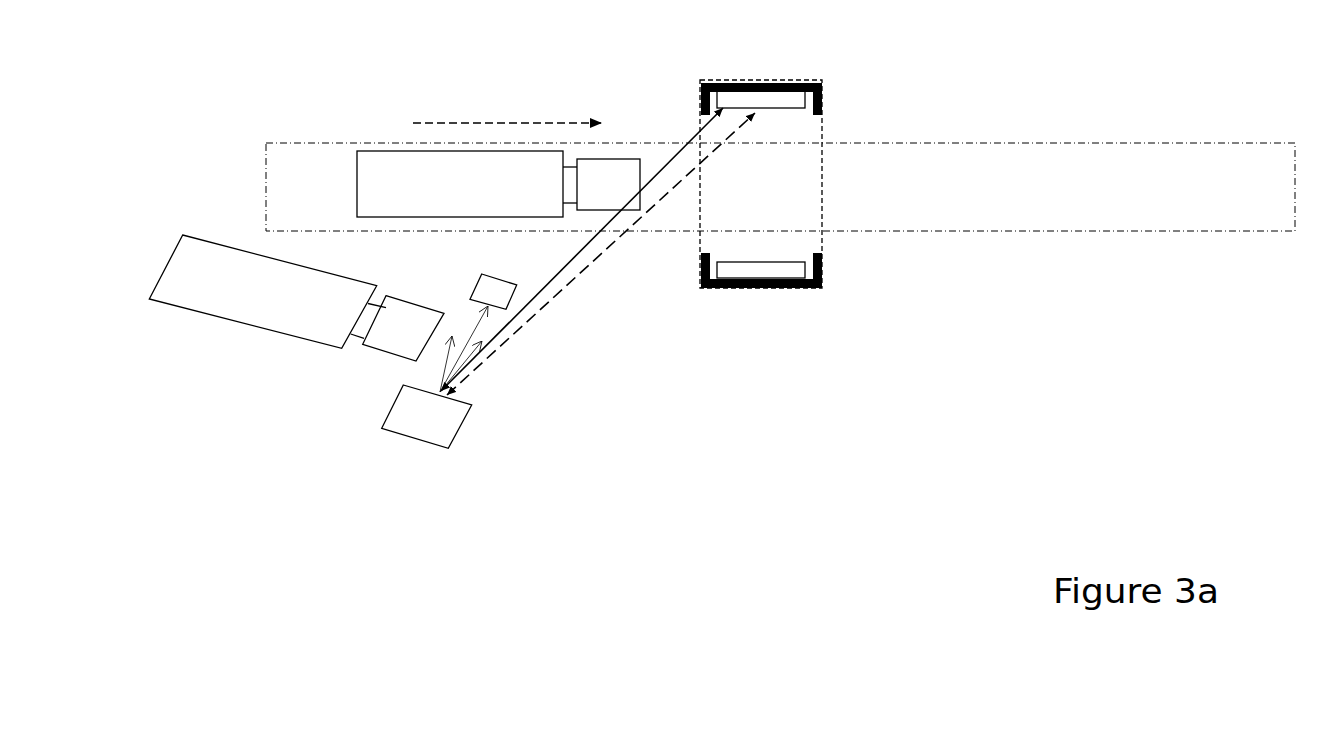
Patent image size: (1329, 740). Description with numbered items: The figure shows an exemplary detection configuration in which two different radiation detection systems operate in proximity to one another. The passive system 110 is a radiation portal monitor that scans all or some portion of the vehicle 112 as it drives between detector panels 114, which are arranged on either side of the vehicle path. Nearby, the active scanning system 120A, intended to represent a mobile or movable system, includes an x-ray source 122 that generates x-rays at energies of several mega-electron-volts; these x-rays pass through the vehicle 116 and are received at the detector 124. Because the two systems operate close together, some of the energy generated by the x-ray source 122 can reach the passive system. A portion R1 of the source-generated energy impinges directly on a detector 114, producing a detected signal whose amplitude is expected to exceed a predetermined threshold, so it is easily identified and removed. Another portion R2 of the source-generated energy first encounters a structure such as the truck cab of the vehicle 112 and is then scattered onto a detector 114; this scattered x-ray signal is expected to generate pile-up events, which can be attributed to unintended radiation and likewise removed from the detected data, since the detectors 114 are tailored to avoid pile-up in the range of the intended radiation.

The passive detection system 110 is at (845, 295).
The vehicle 112 is at (468, 175).
The detector panels 114 is at (780, 98).
The vehicle 116 is at (225, 318).
The active scanning system 120A is at (518, 397).
The x-ray source 122 is at (413, 443).
The detector 124 is at (468, 277).
The direct radiation portion R1 is at (545, 307).
The scattered radiation portion R2 is at (587, 255).